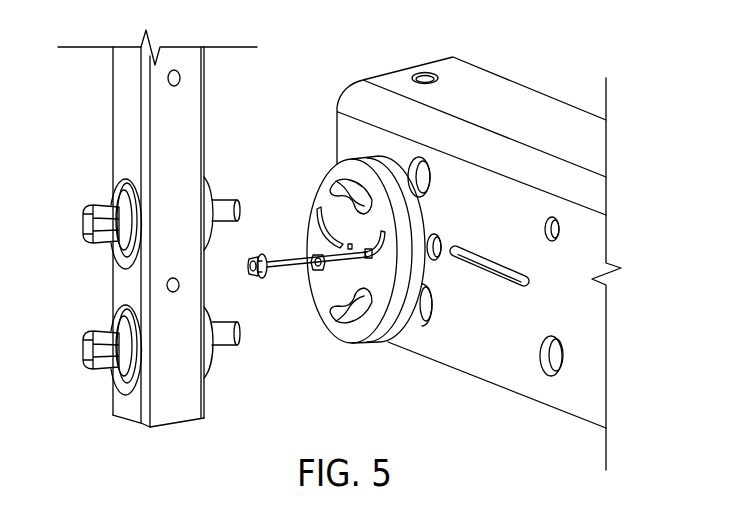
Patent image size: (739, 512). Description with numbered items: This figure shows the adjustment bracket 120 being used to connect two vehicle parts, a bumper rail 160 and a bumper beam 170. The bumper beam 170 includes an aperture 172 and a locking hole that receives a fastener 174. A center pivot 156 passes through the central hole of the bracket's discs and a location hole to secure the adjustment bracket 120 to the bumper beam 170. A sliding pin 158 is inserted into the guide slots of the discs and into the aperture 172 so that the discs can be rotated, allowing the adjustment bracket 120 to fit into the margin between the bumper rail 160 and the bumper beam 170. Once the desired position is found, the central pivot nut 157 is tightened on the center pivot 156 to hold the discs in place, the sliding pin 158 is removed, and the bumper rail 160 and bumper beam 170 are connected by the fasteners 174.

The adjustment bracket 120 is at (311, 163).
The center pivot 156 is at (285, 258).
The central pivot nut 157 is at (251, 273).
The sliding pin 158 is at (317, 272).
The bumper rail 160 is at (180, 102).
The bumper beam 170 is at (511, 94).
The aperture 172 is at (478, 258).
The fasteners 174 is at (88, 229).